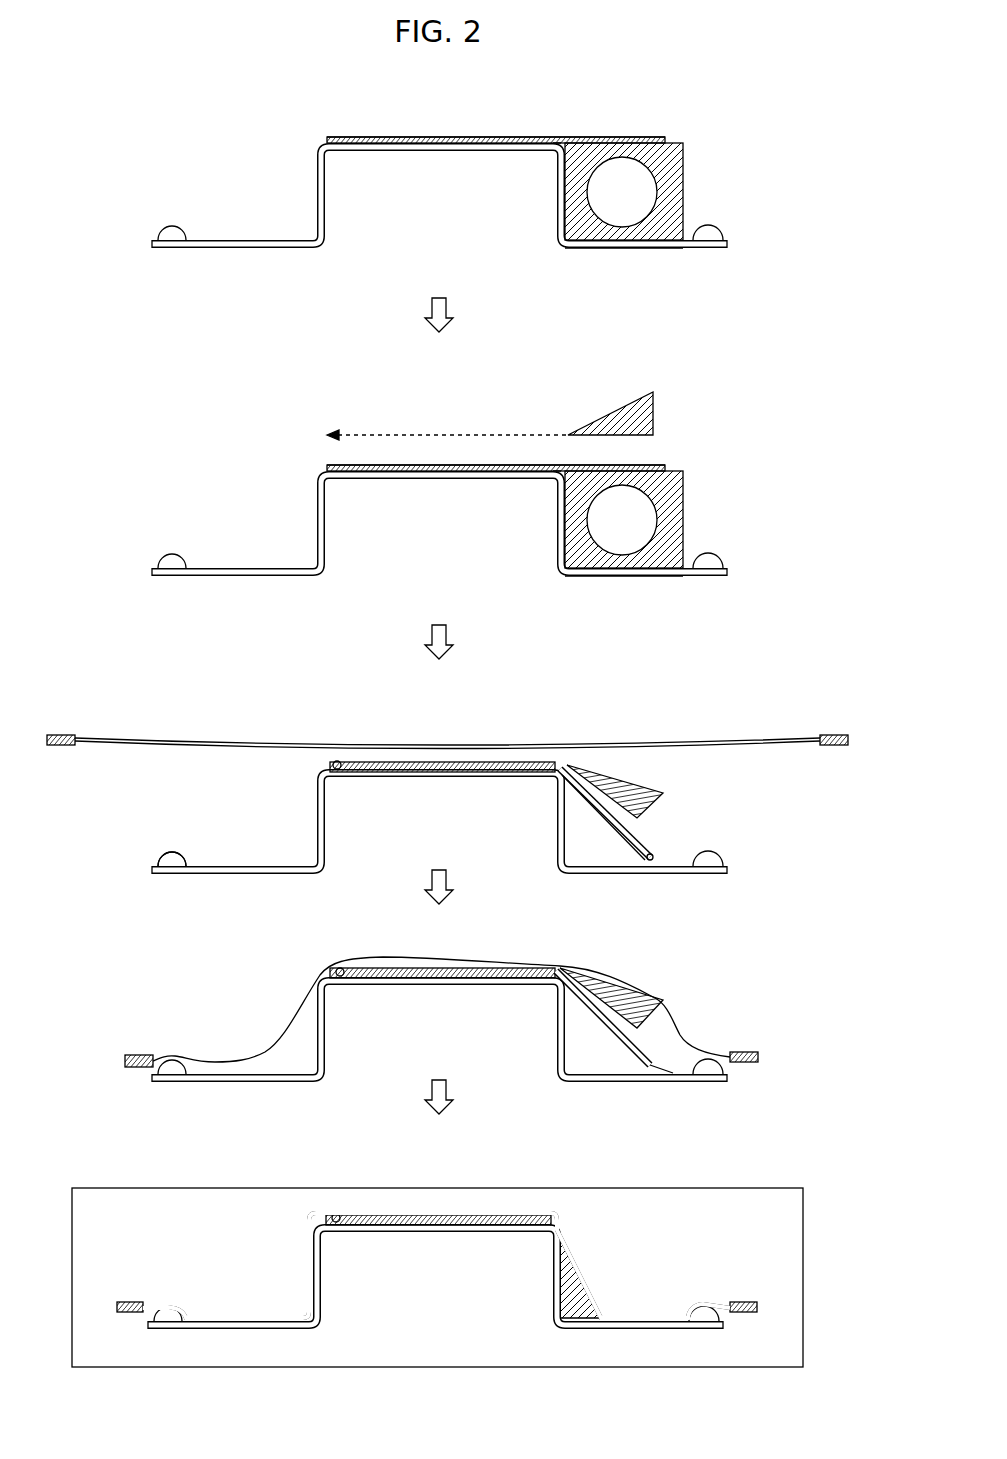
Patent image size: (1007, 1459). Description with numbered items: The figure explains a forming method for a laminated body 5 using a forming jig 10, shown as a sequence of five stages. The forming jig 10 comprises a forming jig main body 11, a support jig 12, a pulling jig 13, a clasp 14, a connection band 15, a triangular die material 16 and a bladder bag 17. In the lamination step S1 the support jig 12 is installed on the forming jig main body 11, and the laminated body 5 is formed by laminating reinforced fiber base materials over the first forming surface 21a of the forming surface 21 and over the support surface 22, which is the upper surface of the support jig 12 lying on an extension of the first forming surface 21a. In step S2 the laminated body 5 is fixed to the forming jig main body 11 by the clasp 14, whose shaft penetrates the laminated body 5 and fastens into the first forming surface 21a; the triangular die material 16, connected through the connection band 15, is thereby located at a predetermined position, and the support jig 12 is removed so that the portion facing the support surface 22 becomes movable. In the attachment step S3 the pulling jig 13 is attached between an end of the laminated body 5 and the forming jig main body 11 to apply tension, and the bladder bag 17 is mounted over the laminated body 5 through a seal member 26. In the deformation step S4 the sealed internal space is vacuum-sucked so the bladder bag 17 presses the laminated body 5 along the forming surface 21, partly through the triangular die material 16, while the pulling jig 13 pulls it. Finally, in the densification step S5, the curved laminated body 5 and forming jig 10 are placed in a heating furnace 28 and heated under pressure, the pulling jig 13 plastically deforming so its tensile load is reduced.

The laminated body 5 is at (548, 143).
The forming jig 10 is at (282, 387).
The forming jig main body 11 is at (252, 240).
The support jig 12 is at (588, 248).
The pulling jig 13 is at (666, 862).
The clasp 14 is at (336, 430).
The connection band 15 is at (436, 435).
The triangular die material 16 is at (625, 410).
The bladder bag 17 is at (168, 738).
The forming surface 21 is at (388, 137).
The first forming surface 21a is at (488, 137).
The support surface 22 is at (638, 140).
The seal member 26 is at (175, 853).
The heating furnace 28 is at (157, 1188).
The lamination step S1 is at (697, 110).
The fixing and support jig removal step S2 is at (697, 387).
The attachment step S3 is at (697, 715).
The deformation step S4 is at (697, 961).
The densification step S5 is at (689, 1168).